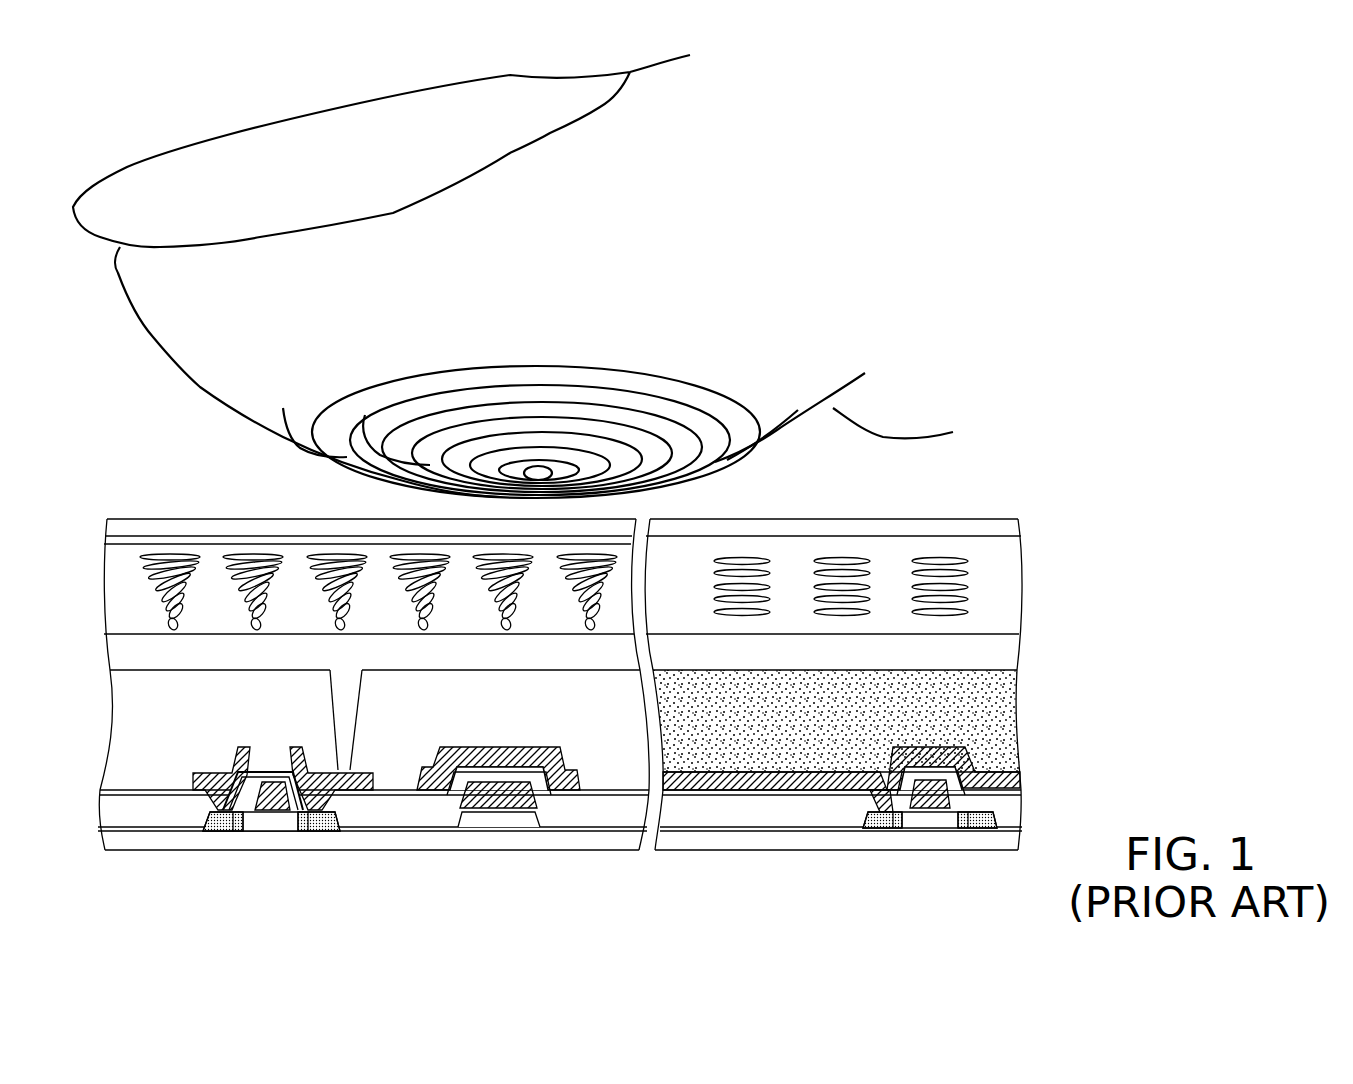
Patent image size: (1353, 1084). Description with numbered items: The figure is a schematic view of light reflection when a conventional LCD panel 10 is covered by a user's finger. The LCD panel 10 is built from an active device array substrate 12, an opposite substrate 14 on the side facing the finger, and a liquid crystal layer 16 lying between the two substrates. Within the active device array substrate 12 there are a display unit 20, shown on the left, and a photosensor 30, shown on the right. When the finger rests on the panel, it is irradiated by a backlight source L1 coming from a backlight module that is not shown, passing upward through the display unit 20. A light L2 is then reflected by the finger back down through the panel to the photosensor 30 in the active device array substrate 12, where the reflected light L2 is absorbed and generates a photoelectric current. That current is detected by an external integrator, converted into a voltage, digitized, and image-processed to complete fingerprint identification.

The LCD panel 10 is at (594, 719).
The active device array substrate 12 is at (594, 743).
The opposite substrate 14 is at (1040, 519).
The liquid crystal layer 16 is at (1040, 544).
The display unit 20 is at (296, 873).
The photosensor 30 is at (928, 873).
The backlight source L1 is at (411, 521).
The reflected light L2 is at (420, 492).